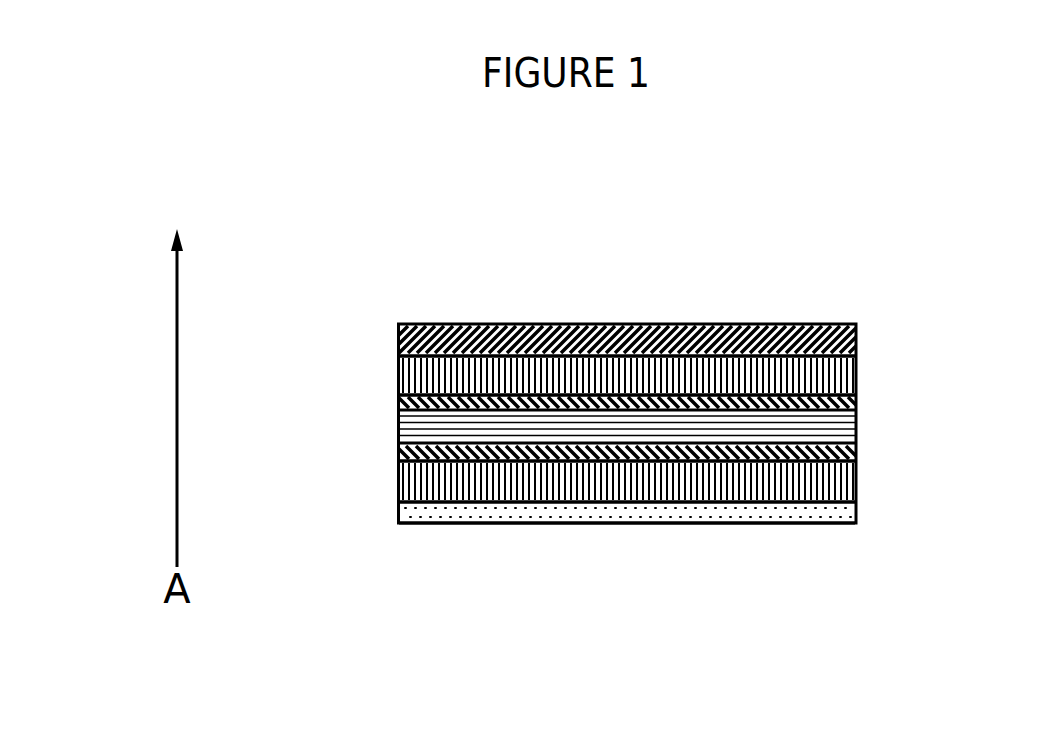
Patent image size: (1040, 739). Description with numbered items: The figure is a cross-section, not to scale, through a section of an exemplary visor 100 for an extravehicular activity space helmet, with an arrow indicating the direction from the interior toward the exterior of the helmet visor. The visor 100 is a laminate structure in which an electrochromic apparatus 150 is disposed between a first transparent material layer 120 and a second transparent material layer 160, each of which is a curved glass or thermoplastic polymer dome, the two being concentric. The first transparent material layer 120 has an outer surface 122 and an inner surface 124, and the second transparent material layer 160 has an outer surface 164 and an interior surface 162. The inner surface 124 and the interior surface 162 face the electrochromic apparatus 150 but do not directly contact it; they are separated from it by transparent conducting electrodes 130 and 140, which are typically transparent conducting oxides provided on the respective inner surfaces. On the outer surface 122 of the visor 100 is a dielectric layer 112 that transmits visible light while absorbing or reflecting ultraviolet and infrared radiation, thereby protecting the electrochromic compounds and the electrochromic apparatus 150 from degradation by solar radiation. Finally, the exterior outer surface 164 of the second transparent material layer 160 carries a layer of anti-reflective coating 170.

The visor 100 is at (814, 286).
The dielectric layer 112 is at (410, 344).
The first transparent material layer 120 is at (827, 376).
The outer surface 122 is at (578, 352).
The inner surface 124 is at (772, 393).
The transparent conducting electrode 130 is at (410, 402).
The transparent conducting electrode 140 is at (410, 453).
The electrochromic apparatus 150 is at (840, 425).
The second transparent material layer 160 is at (828, 488).
The interior surface 162 is at (500, 463).
The outer surface 164 is at (647, 498).
The layer of anti-reflective coating 170 is at (410, 510).